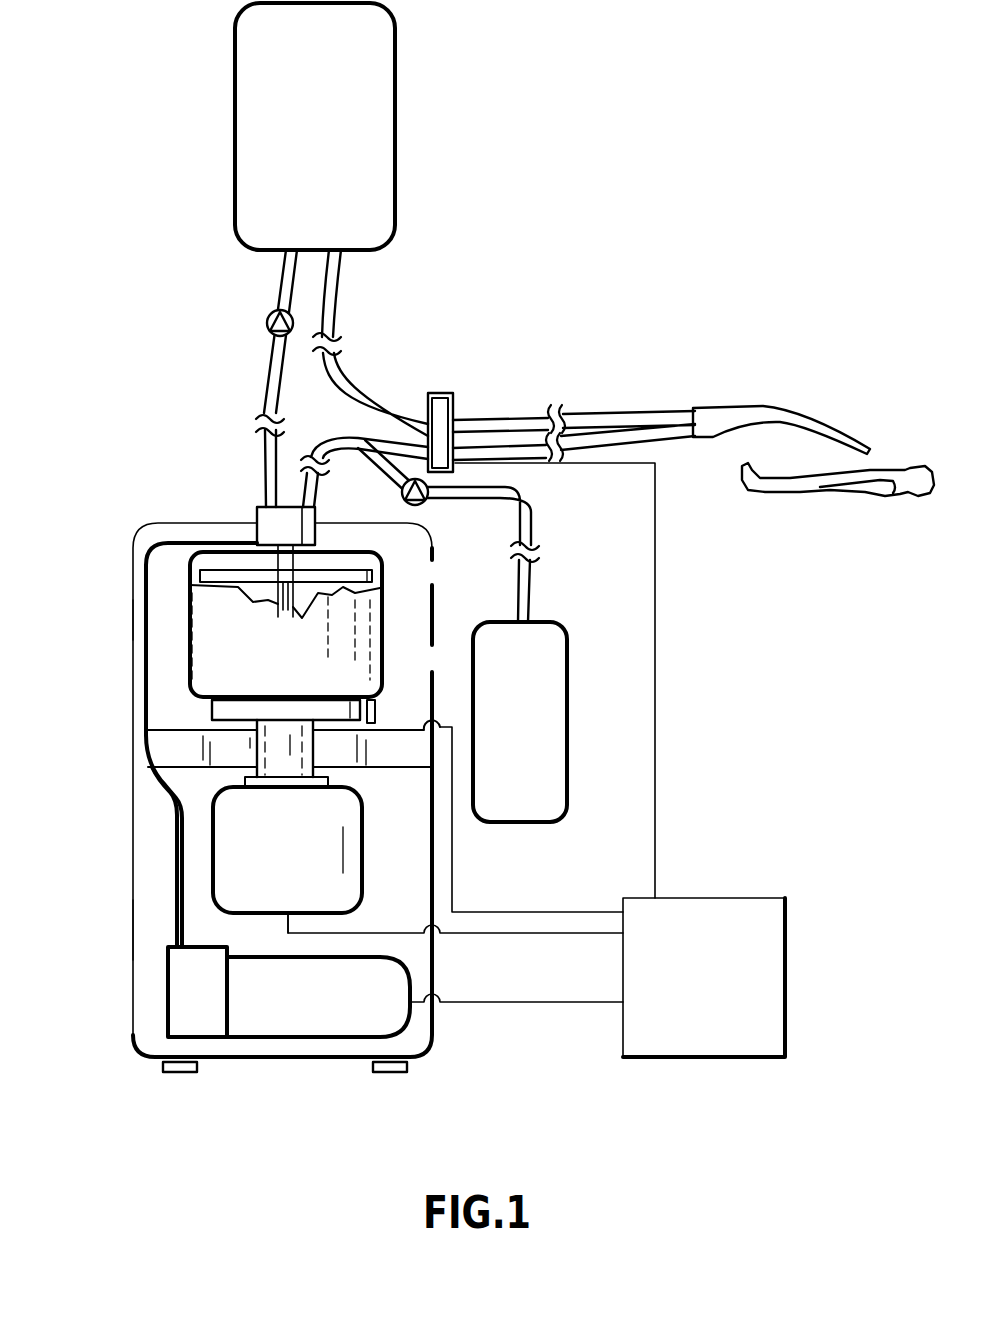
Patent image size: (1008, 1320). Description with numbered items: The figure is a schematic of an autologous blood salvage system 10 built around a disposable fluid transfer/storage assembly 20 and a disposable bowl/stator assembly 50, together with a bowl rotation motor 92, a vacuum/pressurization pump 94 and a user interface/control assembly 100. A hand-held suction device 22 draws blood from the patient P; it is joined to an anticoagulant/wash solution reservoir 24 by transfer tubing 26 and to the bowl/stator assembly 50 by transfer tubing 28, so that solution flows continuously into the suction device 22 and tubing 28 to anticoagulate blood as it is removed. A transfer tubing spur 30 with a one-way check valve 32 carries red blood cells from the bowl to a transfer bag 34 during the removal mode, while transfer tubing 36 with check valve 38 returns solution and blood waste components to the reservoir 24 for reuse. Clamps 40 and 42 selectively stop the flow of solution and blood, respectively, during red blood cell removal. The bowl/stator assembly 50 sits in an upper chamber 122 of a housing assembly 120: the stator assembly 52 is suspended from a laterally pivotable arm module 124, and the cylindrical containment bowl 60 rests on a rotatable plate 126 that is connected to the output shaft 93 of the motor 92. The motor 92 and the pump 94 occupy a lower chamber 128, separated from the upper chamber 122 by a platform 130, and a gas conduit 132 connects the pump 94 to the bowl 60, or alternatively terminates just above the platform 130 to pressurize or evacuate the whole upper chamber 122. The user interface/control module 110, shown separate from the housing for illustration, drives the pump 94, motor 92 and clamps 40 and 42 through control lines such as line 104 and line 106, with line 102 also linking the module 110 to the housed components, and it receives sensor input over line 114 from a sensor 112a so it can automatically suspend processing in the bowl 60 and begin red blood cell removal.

The autologous blood salvage system 10 is at (598, 191).
The fluid transfer/storage assembly 20 is at (497, 380).
The suction device 22 is at (764, 407).
The anticoagulant/wash solution reservoir 24 is at (370, 123).
The transfer tubing 26 is at (333, 298).
The transfer tubing 28 is at (657, 440).
The transfer tubing spur 30 is at (540, 537).
The check valve 32 is at (420, 505).
The transfer bag 34 is at (567, 707).
The transfer tubing 36 is at (266, 380).
The check valve 38 is at (266, 322).
The clamp 40 is at (440, 394).
The clamp 42 is at (457, 464).
The bowl/stator assembly 50 is at (186, 577).
The stator assembly 52 is at (268, 566).
The containment bowl 60 is at (188, 657).
The bowl rotation motor 92 is at (362, 865).
The output shaft 93 is at (287, 770).
The vacuum/pressurization pump 94 is at (170, 1013).
The user interface/control assembly 100 is at (713, 866).
The control line 102 is at (512, 935).
The control line 104 is at (520, 1003).
The control line 106 is at (657, 625).
The user interface/control module 110 is at (745, 1035).
The sensor 112a is at (378, 712).
The line 114 is at (453, 865).
The housing assembly 120 is at (134, 905).
The upper chamber 122 is at (183, 722).
The arm module 124 is at (316, 537).
The rotatable plate 126 is at (212, 702).
The lower chamber 128 is at (275, 950).
The platform 130 is at (136, 743).
The gas conduit 132 is at (135, 642).
The patient P is at (885, 489).